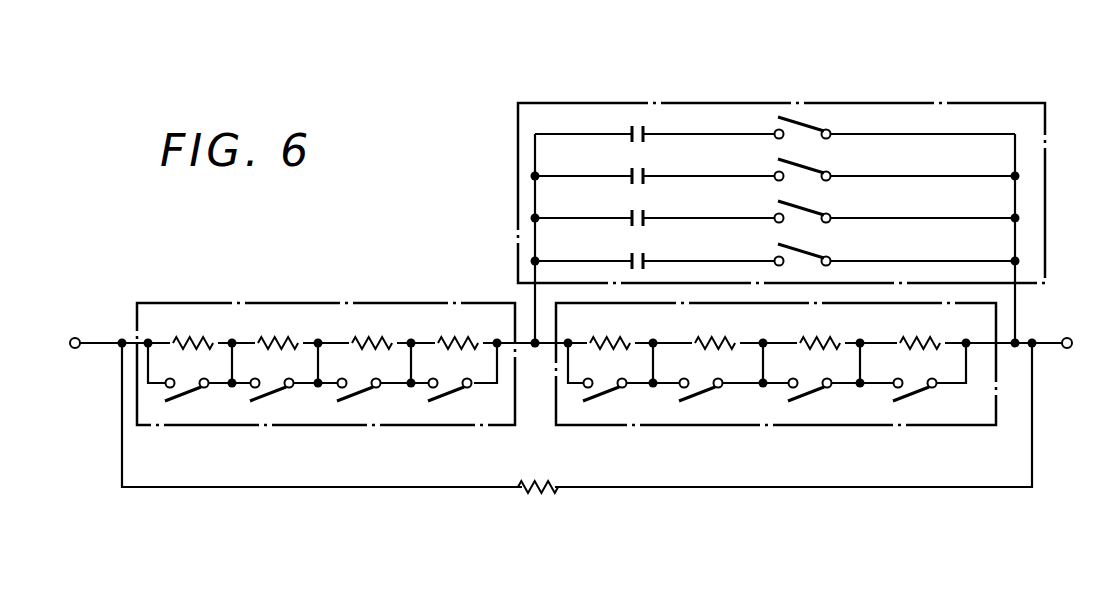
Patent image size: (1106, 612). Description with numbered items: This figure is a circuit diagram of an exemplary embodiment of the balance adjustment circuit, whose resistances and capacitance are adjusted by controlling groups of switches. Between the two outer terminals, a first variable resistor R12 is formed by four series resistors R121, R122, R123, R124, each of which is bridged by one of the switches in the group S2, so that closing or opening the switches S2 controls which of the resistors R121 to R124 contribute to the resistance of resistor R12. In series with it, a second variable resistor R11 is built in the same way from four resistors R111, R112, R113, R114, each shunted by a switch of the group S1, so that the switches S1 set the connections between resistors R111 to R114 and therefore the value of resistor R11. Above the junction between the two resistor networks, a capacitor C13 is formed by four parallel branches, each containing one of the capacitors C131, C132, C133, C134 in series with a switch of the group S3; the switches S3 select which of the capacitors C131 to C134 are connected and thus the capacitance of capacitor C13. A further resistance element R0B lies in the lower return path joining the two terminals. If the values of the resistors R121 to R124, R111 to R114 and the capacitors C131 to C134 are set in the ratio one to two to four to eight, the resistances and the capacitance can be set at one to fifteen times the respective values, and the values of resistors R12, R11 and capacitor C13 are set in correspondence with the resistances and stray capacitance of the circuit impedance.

The resistor R12 is at (256, 302).
The resistor R121 is at (180, 334).
The resistor R122 is at (265, 334).
The resistor R123 is at (358, 334).
The resistor R124 is at (446, 334).
The group of switches S2 is at (463, 432).
The resistor R11 is at (775, 427).
The resistor R111 is at (597, 334).
The resistor R112 is at (702, 334).
The resistor R113 is at (807, 334).
The resistor R114 is at (907, 334).
The group of switches S1 is at (925, 432).
The capacitor C13 is at (885, 102).
The capacitor C131 is at (648, 130).
The capacitor C132 is at (648, 172).
The capacitor C133 is at (648, 214).
The capacitor C134 is at (648, 257).
The group of switches S3 is at (847, 250).
The variable resistance element R0B is at (542, 478).